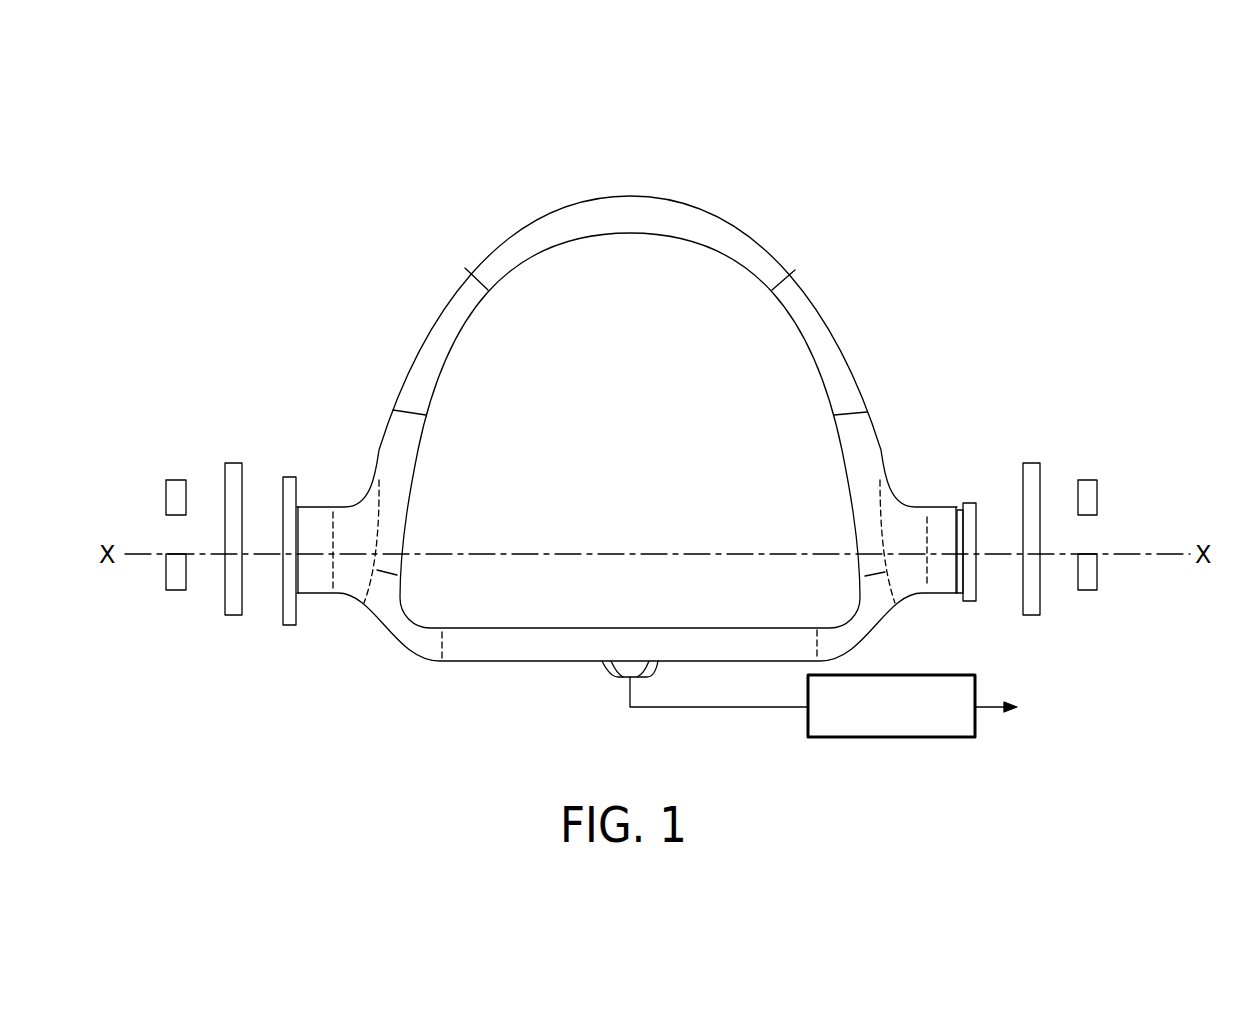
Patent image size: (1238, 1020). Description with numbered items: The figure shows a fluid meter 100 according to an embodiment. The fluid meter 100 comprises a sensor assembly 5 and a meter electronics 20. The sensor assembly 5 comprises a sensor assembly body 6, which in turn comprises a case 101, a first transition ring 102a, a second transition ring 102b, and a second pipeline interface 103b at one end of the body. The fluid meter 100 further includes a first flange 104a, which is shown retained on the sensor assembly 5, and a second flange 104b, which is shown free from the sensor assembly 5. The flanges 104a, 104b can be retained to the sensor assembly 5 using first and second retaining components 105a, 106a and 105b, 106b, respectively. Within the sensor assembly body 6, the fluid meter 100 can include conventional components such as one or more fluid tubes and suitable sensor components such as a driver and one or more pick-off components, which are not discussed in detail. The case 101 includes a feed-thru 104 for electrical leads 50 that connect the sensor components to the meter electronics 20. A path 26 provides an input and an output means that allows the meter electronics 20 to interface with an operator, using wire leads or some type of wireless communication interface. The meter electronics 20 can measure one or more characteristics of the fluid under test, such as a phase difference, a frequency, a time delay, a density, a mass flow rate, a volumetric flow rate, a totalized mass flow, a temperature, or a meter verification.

The fluid meter 100 is at (846, 152).
The sensor assembly 5 is at (372, 686).
The sensor assembly body 6 is at (347, 410).
The case 101 is at (738, 228).
The first transition ring 102a is at (311, 512).
The second transition ring 102b is at (948, 512).
The second pipeline interface 103b is at (972, 505).
The feed-thru 104 is at (613, 677).
The first flange 104a is at (226, 470).
The second flange 104b is at (1037, 468).
The first retaining component 105a is at (168, 492).
The first retaining component 105b is at (1093, 492).
The second retaining component 106a is at (170, 568).
The second retaining component 106b is at (1093, 570).
The meter electronics 20 is at (905, 675).
The electrical leads 50 is at (750, 708).
The path 26 is at (985, 710).